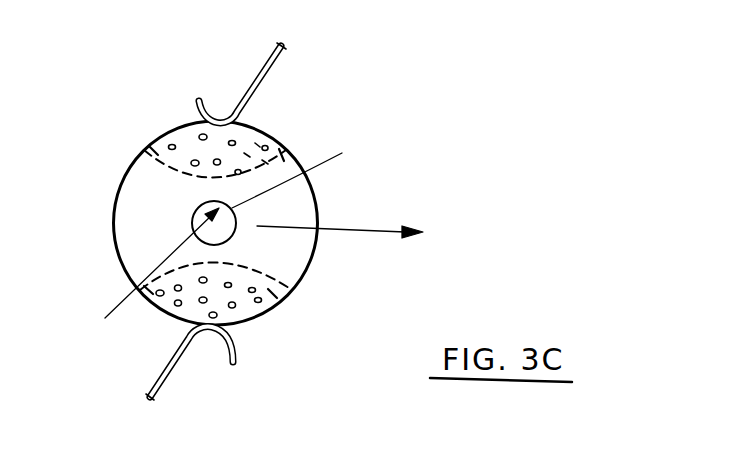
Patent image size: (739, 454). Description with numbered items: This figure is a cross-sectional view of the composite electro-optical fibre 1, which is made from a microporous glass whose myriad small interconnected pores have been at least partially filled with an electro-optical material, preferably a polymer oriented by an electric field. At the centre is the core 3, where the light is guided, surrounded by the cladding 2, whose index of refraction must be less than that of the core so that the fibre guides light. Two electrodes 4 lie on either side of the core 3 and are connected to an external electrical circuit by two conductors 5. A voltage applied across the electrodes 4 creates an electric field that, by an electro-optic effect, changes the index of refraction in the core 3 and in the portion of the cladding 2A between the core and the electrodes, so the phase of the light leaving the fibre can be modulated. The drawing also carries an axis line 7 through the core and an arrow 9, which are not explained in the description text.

The fibre 1 is at (128, 277).
The cladding 2 is at (190, 155).
The portion of the cladding 2A is at (303, 168).
The core 3 is at (193, 210).
The electrodes 4 is at (242, 148).
The conductors 5 is at (210, 402).
The axis 7 is at (167, 258).
The direction of movement 9 is at (343, 201).